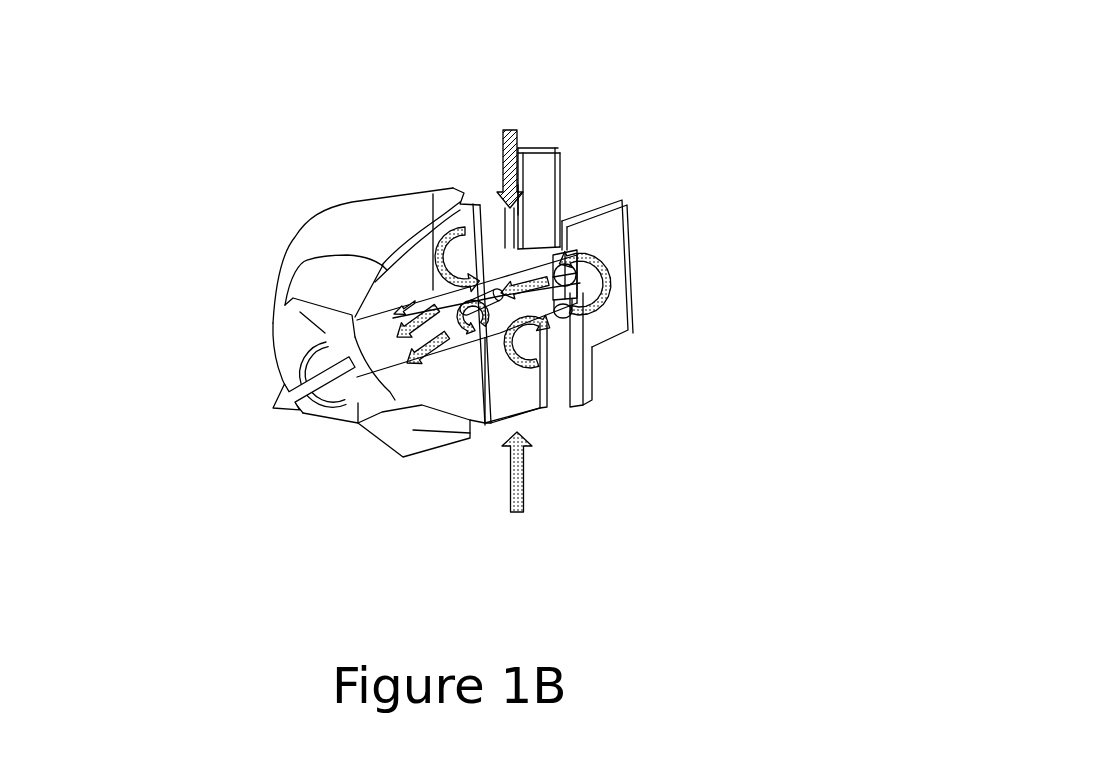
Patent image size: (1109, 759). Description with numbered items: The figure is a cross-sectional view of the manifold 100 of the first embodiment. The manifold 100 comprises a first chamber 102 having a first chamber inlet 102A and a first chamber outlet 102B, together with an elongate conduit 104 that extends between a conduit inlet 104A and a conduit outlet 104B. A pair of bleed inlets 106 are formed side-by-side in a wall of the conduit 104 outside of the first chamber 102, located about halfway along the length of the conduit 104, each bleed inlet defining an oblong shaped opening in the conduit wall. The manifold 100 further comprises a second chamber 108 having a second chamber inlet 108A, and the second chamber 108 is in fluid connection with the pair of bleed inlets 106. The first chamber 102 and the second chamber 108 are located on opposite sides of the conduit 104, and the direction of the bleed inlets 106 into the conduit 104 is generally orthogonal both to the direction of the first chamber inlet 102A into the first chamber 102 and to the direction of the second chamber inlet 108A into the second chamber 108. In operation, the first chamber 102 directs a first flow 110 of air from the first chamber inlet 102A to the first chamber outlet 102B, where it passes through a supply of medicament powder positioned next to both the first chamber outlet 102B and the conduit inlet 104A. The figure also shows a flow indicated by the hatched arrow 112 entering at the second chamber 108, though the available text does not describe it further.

The manifold 100 is at (693, 96).
The first chamber 102 is at (553, 390).
The first chamber inlet 102A is at (525, 417).
The first chamber outlet 102B is at (567, 313).
The conduit 104 is at (398, 360).
The conduit inlet 104A is at (557, 273).
The conduit outlet 104B is at (342, 395).
The bleed inlets 106 is at (488, 300).
The second chamber 108 is at (527, 215).
The second chamber inlet 108A is at (490, 196).
The first flow 110 is at (518, 477).
The downward flow arrow 112 is at (493, 197).